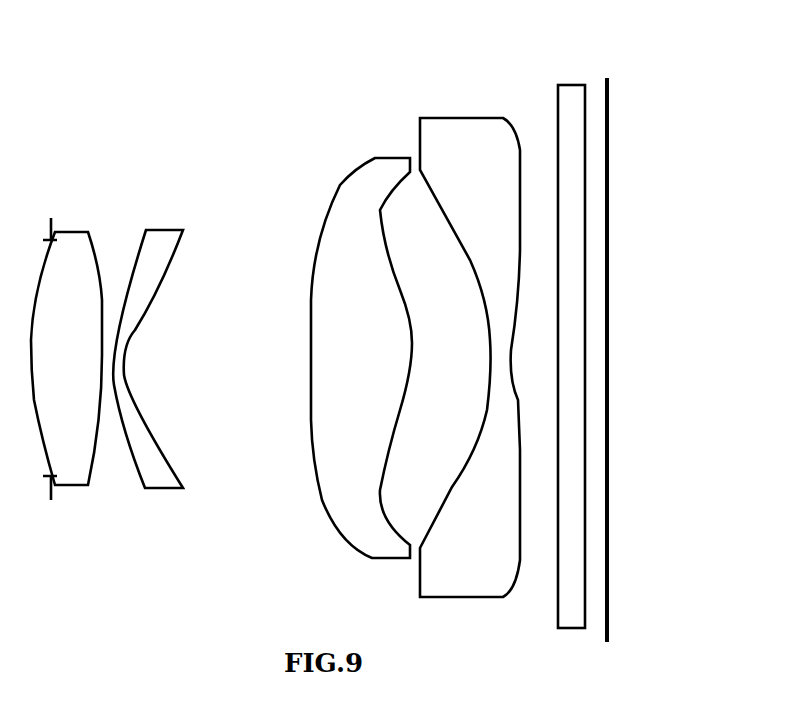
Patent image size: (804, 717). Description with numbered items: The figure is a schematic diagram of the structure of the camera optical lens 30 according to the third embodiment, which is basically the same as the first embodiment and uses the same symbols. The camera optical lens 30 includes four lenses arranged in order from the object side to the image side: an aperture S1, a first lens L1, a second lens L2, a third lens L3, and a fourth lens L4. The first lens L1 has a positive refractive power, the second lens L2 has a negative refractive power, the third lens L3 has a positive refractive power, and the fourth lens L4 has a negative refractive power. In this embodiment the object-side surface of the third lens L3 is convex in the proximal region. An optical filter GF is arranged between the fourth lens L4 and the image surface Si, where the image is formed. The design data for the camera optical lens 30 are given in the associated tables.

The camera optical lens 30 is at (338, 53).
The aperture S1 is at (42, 353).
The first lens L1 is at (66, 348).
The second lens L2 is at (148, 348).
The third lens L3 is at (361, 346).
The fourth lens L4 is at (470, 346).
The optical filter GF is at (570, 347).
The image surface Si is at (604, 349).